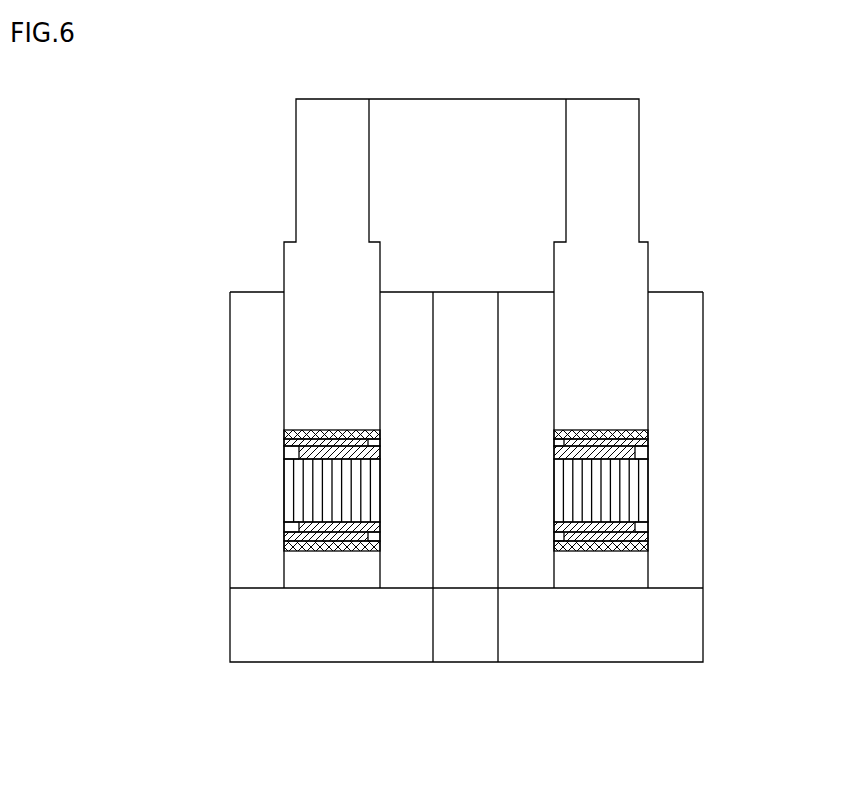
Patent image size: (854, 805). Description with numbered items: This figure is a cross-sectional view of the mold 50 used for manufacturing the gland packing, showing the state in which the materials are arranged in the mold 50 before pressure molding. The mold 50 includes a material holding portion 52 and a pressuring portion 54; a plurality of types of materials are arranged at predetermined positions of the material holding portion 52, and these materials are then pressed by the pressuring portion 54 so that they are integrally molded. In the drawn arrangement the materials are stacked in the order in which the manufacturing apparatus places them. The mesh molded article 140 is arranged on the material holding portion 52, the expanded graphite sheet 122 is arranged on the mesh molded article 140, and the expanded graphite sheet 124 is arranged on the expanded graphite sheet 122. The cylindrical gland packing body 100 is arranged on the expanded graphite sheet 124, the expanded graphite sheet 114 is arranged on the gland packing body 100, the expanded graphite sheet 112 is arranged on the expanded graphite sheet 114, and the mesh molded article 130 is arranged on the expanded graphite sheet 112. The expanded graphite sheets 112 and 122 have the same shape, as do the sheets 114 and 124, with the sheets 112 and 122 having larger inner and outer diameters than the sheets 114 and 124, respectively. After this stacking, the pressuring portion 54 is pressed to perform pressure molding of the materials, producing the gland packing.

The mold 50 is at (467, 426).
The material holding portion 52 is at (337, 653).
The pressuring portion 54 is at (627, 163).
The gland packing body 100 is at (643, 510).
The expanded graphite sheet 112 is at (649, 447).
The expanded graphite sheet 114 is at (622, 463).
The expanded graphite sheet 122 is at (283, 537).
The expanded graphite sheet 124 is at (283, 528).
The mesh molded article 130 is at (627, 430).
The mesh molded article 140 is at (297, 552).